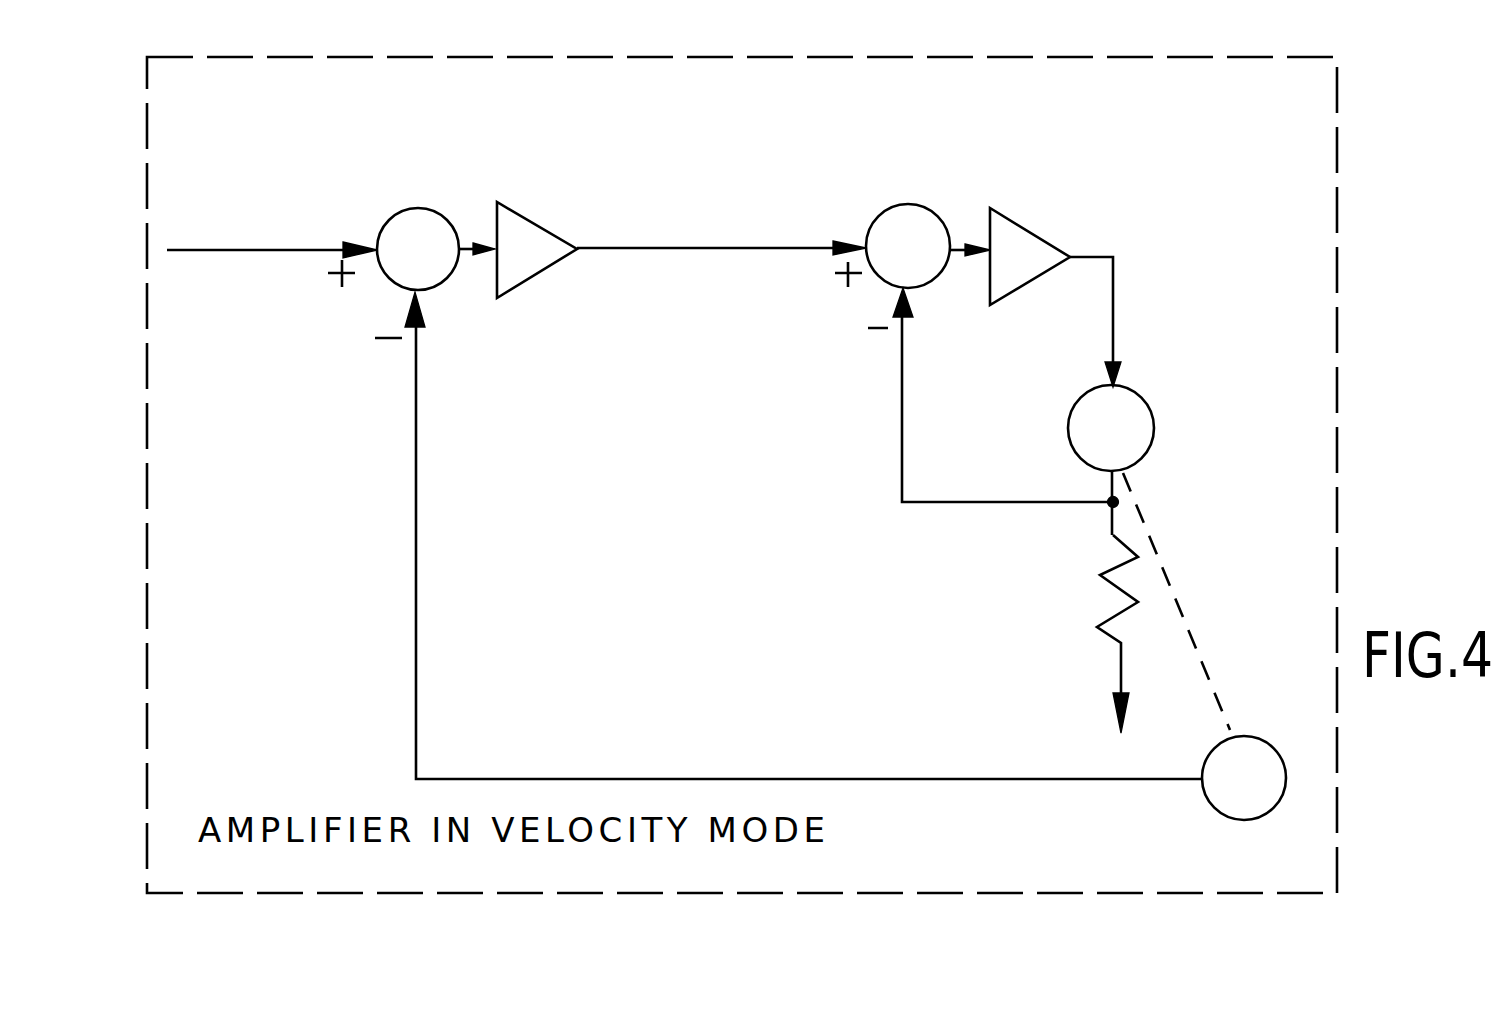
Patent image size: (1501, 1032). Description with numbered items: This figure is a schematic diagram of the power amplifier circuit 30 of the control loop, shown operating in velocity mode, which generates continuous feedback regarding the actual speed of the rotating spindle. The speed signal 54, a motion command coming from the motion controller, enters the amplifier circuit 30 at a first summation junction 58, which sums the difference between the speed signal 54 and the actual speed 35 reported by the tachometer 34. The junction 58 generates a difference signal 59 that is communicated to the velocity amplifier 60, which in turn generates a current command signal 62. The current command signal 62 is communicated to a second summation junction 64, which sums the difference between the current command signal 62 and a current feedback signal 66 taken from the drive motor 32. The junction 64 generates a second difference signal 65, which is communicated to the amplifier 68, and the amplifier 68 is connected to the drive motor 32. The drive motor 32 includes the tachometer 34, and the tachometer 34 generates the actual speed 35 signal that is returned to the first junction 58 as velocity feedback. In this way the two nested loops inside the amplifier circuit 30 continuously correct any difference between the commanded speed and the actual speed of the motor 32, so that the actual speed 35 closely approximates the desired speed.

The power amplifier 30 is at (938, 92).
The drive motor 32 is at (1140, 390).
The tachometer 34 is at (1257, 735).
The actual speed 35 is at (722, 742).
The speed signal 54 is at (230, 218).
The summation junction 58 is at (402, 207).
The difference signal 59 is at (462, 243).
The velocity amplifier 60 is at (518, 287).
The current command signal 62 is at (653, 287).
The summation junction 64 is at (882, 207).
The difference signal 65 is at (953, 256).
The current feedback signal 66 is at (995, 465).
The amplifier 68 is at (1030, 280).